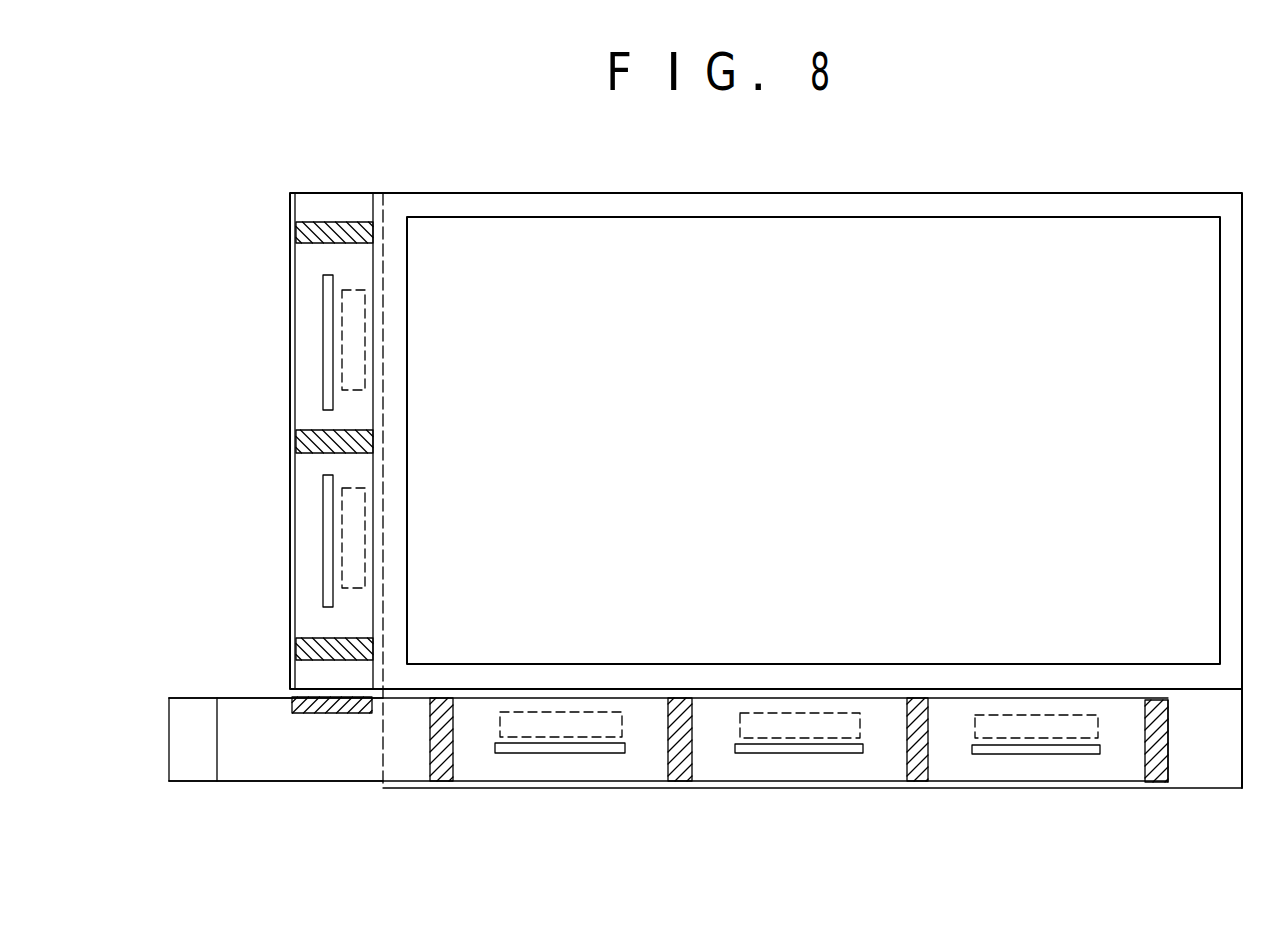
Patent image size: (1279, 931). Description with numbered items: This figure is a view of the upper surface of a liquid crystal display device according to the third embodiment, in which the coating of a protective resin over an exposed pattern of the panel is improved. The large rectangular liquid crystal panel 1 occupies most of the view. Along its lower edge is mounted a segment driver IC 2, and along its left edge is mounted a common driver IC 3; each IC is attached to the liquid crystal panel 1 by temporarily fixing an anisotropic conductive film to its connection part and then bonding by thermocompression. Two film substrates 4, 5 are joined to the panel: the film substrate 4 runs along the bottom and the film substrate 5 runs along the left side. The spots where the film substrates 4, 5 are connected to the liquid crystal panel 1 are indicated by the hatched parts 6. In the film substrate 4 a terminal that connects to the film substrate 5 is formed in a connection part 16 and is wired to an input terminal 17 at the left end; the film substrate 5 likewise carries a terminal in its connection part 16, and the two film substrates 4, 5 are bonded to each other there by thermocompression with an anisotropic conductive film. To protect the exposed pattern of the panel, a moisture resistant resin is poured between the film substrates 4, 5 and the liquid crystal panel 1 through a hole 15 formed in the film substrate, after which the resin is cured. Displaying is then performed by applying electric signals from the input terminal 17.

The liquid crystal panel 1 is at (927, 248).
The segment driver IC 2 is at (573, 728).
The common driver IC 3 is at (350, 337).
The film substrate 4 is at (275, 767).
The film substrate 5 is at (318, 690).
The hatched part 6 is at (918, 765).
The hole 15 is at (807, 747).
The connection part 16 is at (327, 713).
The input terminal 17 is at (198, 768).